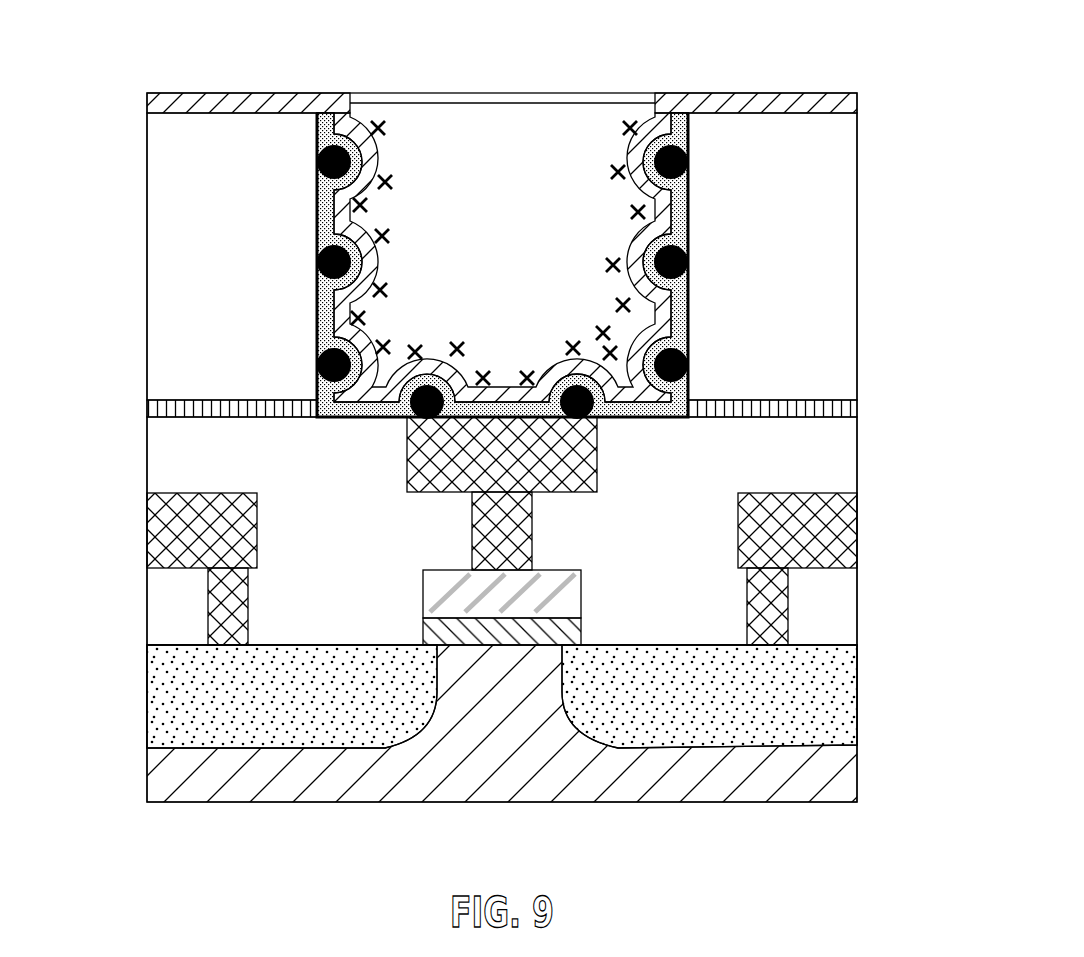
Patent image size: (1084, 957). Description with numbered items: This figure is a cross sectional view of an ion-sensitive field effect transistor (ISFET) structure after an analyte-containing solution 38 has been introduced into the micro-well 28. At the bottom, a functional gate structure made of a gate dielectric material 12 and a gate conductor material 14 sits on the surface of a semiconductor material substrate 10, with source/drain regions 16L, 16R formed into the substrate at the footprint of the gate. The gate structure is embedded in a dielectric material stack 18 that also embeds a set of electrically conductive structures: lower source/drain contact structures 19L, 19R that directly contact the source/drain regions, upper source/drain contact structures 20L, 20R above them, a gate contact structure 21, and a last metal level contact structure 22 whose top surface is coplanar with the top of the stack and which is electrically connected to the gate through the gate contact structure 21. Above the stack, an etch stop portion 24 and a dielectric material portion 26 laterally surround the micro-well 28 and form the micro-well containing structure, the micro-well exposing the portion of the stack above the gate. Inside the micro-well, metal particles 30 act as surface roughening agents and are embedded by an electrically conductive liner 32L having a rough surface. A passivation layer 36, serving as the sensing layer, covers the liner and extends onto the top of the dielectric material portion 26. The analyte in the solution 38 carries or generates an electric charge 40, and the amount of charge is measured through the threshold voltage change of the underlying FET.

The semiconductor material substrate 10 is at (479, 756).
The gate dielectric material 12 is at (575, 631).
The gate conductor material 14 is at (482, 608).
The source/drain region 16L is at (263, 711).
The source/drain region 16R is at (690, 711).
The dielectric material stack 18 is at (310, 526).
The lower source/drain contact structure 19L is at (208, 613).
The lower source/drain contact structure 19R is at (788, 613).
The upper source/drain contact structure 20L is at (175, 545).
The upper source/drain contact structure 20R is at (780, 545).
The gate contact structure 21 is at (484, 545).
The last metal level contact structure 22 is at (484, 470).
The etch stop portion 24 is at (157, 408).
The dielectric material portion 26 is at (189, 304).
The micro-well 28 is at (476, 160).
The metal particles 30 is at (334, 262).
The electrically conductive liner 32L is at (327, 123).
The passivation layer 36 is at (760, 98).
The analyte-containing solution 38 is at (487, 256).
The electric charge 40 is at (528, 362).